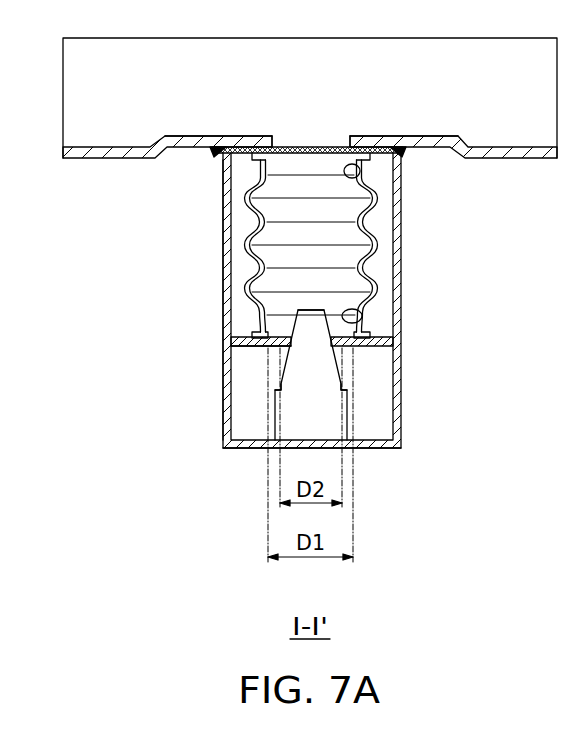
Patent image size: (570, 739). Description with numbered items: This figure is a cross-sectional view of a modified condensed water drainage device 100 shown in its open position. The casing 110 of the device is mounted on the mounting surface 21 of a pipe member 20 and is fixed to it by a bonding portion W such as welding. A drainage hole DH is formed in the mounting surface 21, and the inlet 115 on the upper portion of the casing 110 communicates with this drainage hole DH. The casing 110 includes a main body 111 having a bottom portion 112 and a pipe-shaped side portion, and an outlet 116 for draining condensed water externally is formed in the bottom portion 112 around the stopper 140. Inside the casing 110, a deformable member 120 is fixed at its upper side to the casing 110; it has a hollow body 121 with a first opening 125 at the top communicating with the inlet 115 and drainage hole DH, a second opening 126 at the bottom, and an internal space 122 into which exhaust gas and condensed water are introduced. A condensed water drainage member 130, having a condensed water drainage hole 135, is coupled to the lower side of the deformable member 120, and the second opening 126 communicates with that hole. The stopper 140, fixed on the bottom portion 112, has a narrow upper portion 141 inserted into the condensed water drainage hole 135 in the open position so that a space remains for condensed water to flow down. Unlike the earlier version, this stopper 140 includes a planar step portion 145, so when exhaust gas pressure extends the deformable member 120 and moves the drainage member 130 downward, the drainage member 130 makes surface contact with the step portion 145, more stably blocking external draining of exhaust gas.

The pipe member 20 is at (108, 155).
The mounting surface 21 is at (187, 142).
The bonding portion W is at (216, 158).
The drainage hole DH is at (350, 138).
The inlet 115 is at (292, 147).
The condensed water drainage device 100 is at (192, 452).
The casing 110 is at (203, 255).
The main body 111 is at (222, 383).
The bottom portion 112 is at (383, 450).
The outlet 116 is at (252, 450).
The deformable member 120 is at (402, 240).
The body 121 is at (376, 292).
The internal space 122 is at (336, 214).
The first opening 125 is at (360, 175).
The second opening 126 is at (365, 309).
The condensed water drainage member 130 is at (392, 341).
The condensed water drainage hole 135 is at (240, 341).
The stopper 140 is at (333, 413).
The upper portion 141 is at (309, 311).
The step portion 145 is at (282, 388).